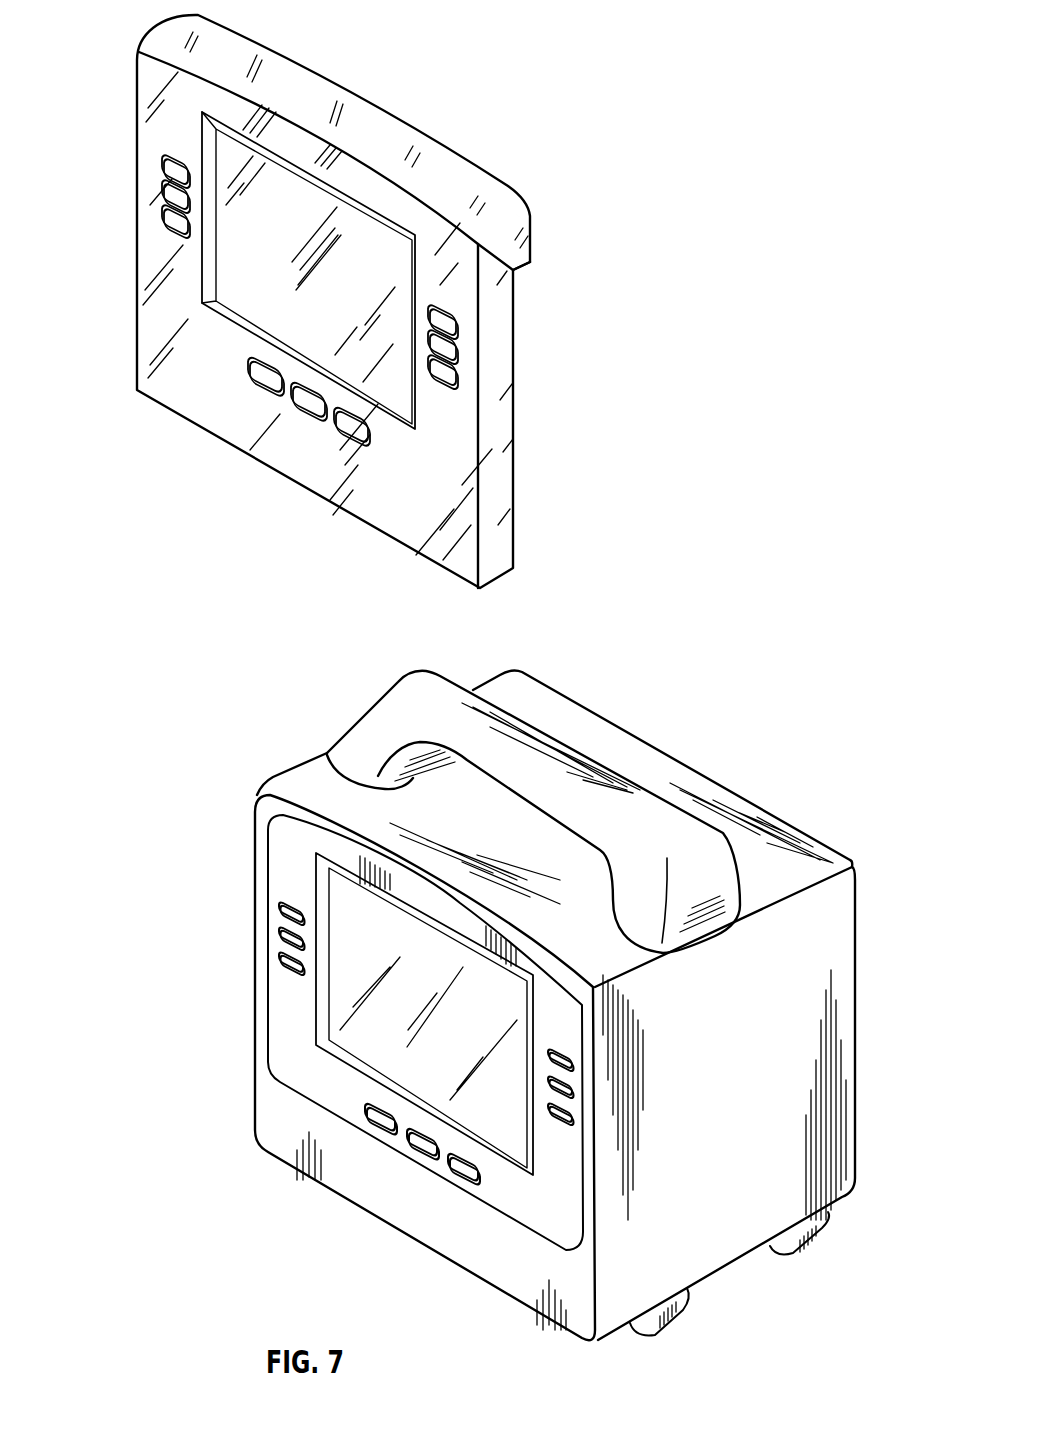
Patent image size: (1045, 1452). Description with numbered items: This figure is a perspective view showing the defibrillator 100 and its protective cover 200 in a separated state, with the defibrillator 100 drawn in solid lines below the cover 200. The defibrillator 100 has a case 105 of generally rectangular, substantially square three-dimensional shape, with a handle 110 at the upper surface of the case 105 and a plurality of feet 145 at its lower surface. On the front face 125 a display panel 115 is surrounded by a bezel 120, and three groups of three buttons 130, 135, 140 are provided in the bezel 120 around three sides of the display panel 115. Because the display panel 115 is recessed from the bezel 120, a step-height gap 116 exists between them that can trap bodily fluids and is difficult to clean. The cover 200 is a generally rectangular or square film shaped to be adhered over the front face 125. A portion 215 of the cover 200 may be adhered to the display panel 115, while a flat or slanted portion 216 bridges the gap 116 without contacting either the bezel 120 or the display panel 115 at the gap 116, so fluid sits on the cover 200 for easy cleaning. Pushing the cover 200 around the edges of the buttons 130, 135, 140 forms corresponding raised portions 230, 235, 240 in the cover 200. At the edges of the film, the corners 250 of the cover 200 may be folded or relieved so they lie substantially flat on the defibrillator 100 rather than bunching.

The defibrillator 100 is at (878, 872).
The case 105 is at (838, 946).
The handle 110 is at (441, 672).
The display panel 115 is at (344, 888).
The gap 116 is at (318, 1030).
The bezel 120 is at (283, 990).
The front face 125 is at (246, 1128).
The buttons 130 is at (274, 970).
The buttons 135 is at (578, 1048).
The buttons 140 is at (360, 1107).
The feet 145 is at (805, 1232).
The cover 200 is at (102, 116).
The portion of the cover 215 is at (236, 257).
The flat or slanted portion 216 is at (225, 315).
The raised portion 230 is at (166, 236).
The raised portion 235 is at (462, 302).
The raised portion 240 is at (243, 365).
The corner of the cover 250 is at (540, 227).